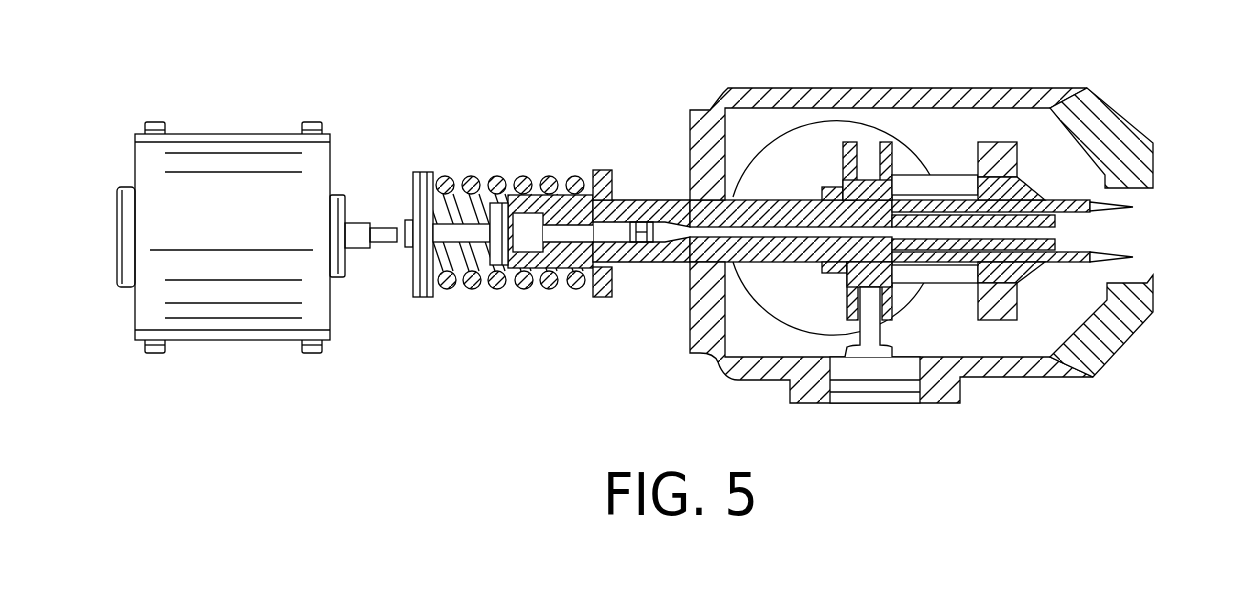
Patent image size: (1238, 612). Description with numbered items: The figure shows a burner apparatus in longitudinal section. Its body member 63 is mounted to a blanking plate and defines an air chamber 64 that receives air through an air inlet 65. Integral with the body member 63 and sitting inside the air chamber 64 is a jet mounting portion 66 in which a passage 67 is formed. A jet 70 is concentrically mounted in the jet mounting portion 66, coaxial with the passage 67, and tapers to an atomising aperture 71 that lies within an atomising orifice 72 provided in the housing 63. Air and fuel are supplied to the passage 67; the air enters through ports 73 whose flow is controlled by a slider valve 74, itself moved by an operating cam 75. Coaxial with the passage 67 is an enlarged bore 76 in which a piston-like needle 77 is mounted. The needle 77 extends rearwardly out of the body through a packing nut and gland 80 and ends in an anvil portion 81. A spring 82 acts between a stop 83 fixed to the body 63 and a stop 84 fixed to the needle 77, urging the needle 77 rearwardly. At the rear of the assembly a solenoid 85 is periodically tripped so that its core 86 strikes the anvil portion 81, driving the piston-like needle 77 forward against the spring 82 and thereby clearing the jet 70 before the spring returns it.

The body member 63 is at (860, 92).
The air chamber 64 is at (1040, 128).
The air inlet 65 is at (818, 143).
The jet mounting portion 66 is at (757, 262).
The passage 67 is at (698, 212).
The jet 70 is at (1090, 204).
The atomising aperture 71 is at (1107, 244).
The atomising orifice 72 is at (1105, 204).
The ports 73 is at (925, 275).
The slider valve 74 is at (876, 277).
The operating cam 75 is at (868, 348).
The enlarged bore 76 is at (570, 275).
The piston-like needle 77 is at (622, 246).
The packing nut and gland 80 is at (506, 266).
The anvil portion 81 is at (406, 246).
The spring 82 is at (520, 183).
The stop 83 is at (618, 130).
The stop 84 is at (418, 172).
The solenoid 85 is at (240, 310).
The core 86 is at (358, 222).